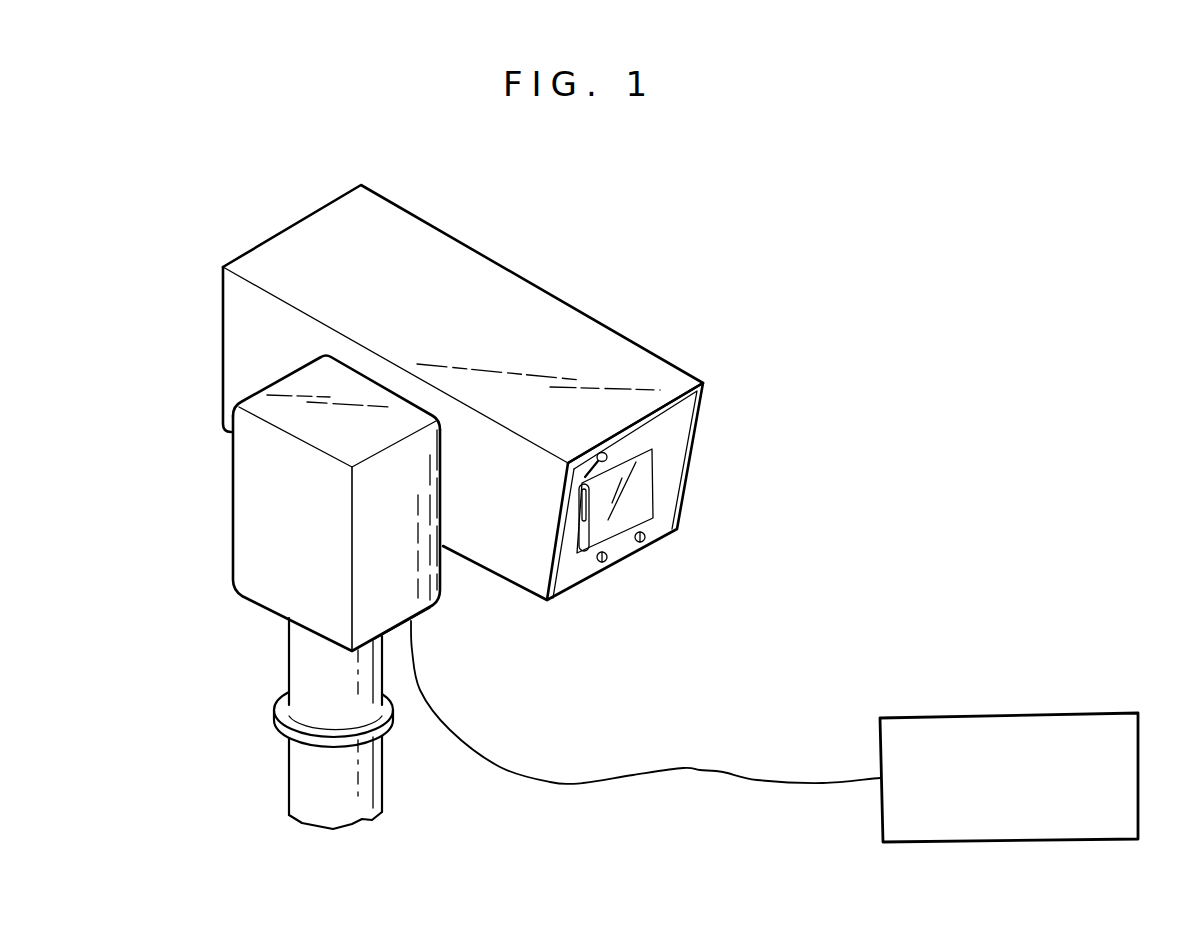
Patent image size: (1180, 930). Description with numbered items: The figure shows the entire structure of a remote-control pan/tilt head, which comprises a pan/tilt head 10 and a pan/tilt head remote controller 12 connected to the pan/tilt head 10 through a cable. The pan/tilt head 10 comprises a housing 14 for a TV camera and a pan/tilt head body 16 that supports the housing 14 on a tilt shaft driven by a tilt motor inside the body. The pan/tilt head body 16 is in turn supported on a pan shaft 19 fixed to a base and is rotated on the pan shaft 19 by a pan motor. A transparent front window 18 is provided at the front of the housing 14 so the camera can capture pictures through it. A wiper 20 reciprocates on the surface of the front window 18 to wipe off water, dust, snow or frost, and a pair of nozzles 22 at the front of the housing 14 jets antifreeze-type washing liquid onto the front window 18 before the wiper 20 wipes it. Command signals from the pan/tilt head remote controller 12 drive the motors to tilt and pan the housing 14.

The pan/tilt head 10 is at (577, 288).
The pan/tilt head remote controller 12 is at (1060, 714).
The housing 14 is at (406, 232).
The pan/tilt head body 16 is at (247, 540).
The front window 18 is at (640, 513).
The pan shaft 19 is at (298, 667).
The wiper 20 is at (583, 555).
The nozzles 22 is at (634, 544).